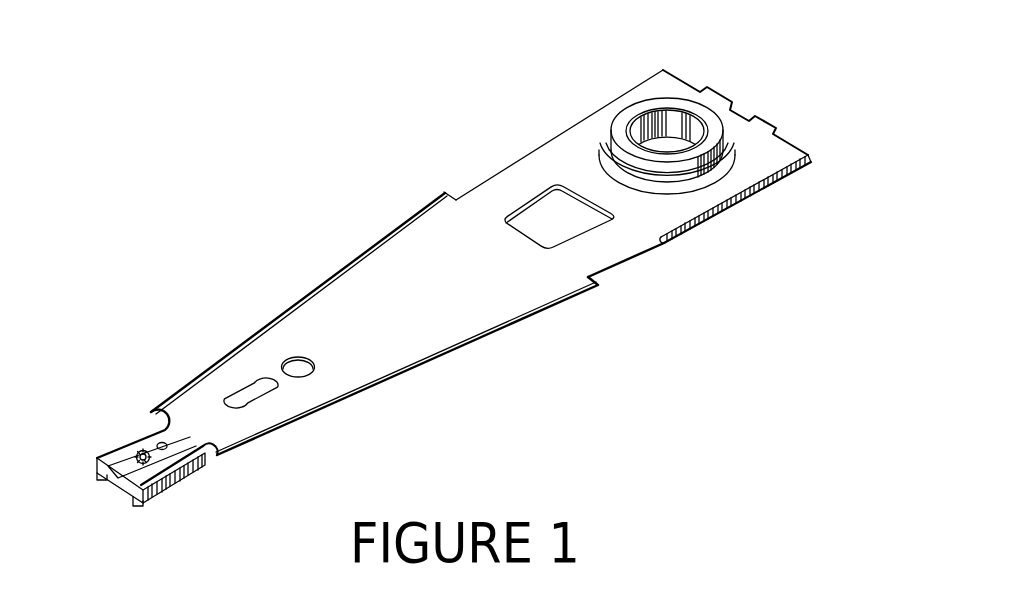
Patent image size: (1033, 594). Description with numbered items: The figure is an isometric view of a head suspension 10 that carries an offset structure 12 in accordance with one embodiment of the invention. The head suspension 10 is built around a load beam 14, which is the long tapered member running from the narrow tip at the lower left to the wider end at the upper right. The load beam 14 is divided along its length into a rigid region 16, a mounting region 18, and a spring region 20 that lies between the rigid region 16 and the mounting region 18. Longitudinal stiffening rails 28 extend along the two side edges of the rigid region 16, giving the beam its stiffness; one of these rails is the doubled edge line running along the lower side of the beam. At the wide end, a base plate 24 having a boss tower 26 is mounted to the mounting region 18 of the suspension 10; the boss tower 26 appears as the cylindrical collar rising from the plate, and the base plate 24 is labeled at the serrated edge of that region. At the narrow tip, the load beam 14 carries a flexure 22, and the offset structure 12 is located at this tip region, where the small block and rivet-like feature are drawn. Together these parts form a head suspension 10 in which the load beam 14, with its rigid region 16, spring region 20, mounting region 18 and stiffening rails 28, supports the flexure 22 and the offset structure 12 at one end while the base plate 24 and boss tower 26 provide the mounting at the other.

The head suspension 10 is at (385, 153).
The offset structure 12 is at (142, 456).
The load beam 14 is at (558, 345).
The rigid region 16 is at (358, 288).
The mounting region 18 is at (690, 207).
The spring region 20 is at (527, 178).
The flexure 22 is at (108, 432).
The base plate 24 is at (812, 162).
The boss tower 26 is at (717, 138).
The longitudinal stiffening rails 28 is at (362, 393).